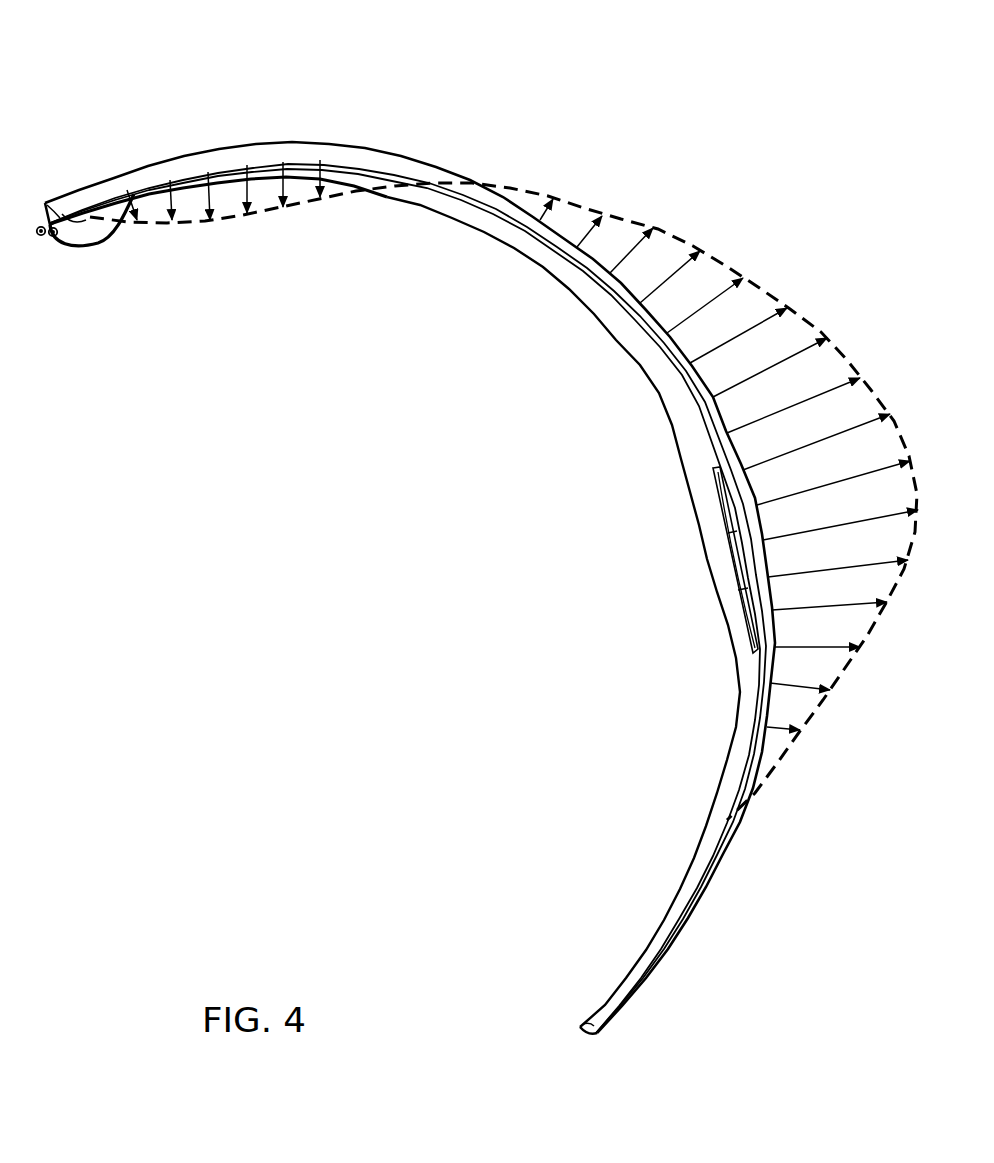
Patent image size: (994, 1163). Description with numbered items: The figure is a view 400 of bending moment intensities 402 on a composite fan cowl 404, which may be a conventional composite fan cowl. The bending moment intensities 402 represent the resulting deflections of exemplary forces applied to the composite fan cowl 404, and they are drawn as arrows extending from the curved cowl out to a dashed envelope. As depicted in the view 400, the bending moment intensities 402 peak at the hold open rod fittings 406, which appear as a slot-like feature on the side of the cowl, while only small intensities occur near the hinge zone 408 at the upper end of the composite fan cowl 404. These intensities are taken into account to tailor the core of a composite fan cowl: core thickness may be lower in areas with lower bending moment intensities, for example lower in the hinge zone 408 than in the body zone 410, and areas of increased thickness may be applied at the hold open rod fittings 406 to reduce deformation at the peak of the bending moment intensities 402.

The view 400 is at (92, 66).
The bending moment intensities 402 is at (656, 193).
The composite fan cowl 404 is at (726, 870).
The hold open rod fittings 406 is at (728, 562).
The hinge zone 408 is at (203, 131).
The body zone 410 is at (642, 424).